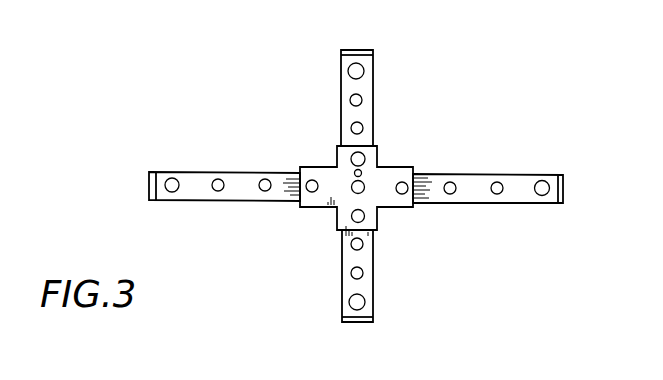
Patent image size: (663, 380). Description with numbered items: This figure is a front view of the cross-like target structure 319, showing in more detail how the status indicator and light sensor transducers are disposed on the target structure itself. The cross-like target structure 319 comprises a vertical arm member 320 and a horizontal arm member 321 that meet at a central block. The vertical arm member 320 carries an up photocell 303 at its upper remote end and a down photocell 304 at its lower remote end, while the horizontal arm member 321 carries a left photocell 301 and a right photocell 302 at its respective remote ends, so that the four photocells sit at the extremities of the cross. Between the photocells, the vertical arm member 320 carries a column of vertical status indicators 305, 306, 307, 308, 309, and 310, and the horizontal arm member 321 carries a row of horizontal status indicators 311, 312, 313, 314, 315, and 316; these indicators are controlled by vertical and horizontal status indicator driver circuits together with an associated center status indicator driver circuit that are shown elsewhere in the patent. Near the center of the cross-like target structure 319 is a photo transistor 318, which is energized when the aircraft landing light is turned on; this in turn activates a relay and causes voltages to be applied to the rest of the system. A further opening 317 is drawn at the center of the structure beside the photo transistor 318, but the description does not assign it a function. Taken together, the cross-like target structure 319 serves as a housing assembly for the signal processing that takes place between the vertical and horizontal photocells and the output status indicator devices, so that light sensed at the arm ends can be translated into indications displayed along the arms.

The left photocell 301 is at (171, 178).
The right photocell 302 is at (542, 181).
The up photocell 303 is at (364, 68).
The down photocell 304 is at (365, 301).
The vertical status indicator 305 is at (362, 100).
The vertical status indicator 306 is at (363, 124).
The vertical status indicator 307 is at (362, 153).
The vertical status indicator 308 is at (366, 216).
The vertical status indicator 309 is at (363, 245).
The vertical status indicator 310 is at (363, 273).
The horizontal status indicator 311 is at (218, 178).
The horizontal status indicator 312 is at (265, 178).
The horizontal status indicator 313 is at (312, 180).
The horizontal status indicator 314 is at (408, 175).
The horizontal status indicator 315 is at (456, 182).
The horizontal status indicator 316 is at (497, 181).
The central hole 317 is at (352, 193).
The photo transistor 318 is at (355, 177).
The cross-like target structure 319 is at (302, 93).
The vertical arm member 320 is at (373, 76).
The horizontal arm member 321 is at (527, 205).